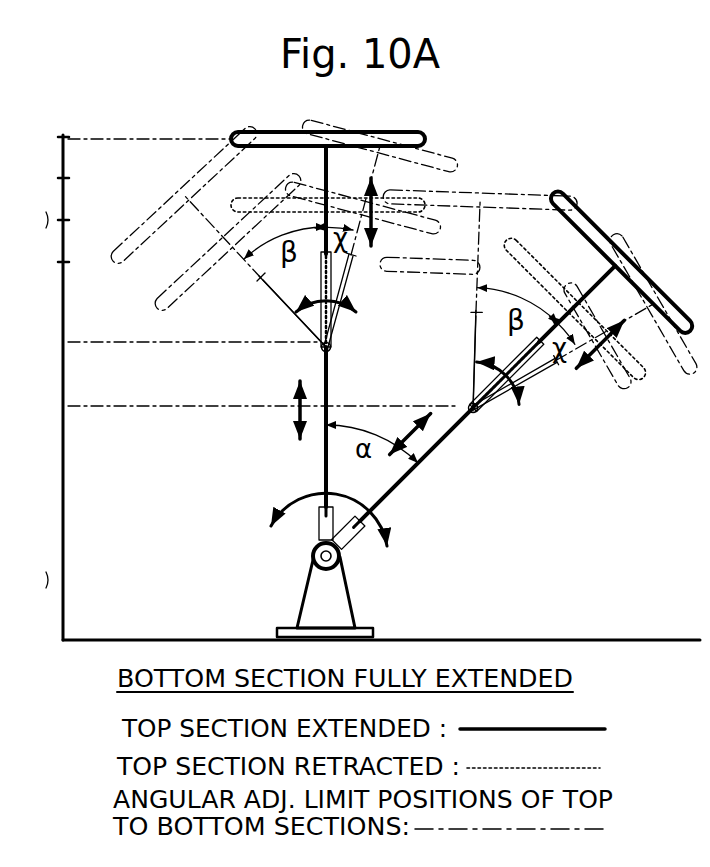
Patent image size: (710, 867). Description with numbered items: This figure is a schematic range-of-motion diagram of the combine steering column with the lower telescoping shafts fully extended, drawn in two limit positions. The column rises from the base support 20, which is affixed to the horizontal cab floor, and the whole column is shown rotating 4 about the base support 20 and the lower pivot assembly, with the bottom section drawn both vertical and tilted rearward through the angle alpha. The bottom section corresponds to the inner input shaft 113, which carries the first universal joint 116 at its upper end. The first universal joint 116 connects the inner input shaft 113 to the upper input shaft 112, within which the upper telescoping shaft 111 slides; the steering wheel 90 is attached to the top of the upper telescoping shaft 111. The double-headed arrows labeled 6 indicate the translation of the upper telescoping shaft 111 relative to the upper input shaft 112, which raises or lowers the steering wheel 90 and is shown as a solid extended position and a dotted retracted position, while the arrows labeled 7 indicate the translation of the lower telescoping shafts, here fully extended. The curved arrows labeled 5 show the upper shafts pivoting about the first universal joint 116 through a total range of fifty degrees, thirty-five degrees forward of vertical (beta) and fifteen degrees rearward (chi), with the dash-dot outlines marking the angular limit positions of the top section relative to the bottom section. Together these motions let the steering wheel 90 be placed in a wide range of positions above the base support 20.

The steering wheel 90 is at (418, 131).
The upper telescoping shaft 111 is at (326, 170).
The upper input shaft 112 is at (296, 314).
The inner input shaft 113 is at (322, 490).
The first universal joint 116 is at (331, 350).
The translation of the upper telescoping shafts 6 is at (374, 190).
The translation of the lower telescoping shafts 7 is at (296, 397).
The pivoting of the upper shaft 5 is at (348, 316).
The pivoting of the lower pivot assembly 4 is at (268, 505).
The base support 20 is at (345, 598).